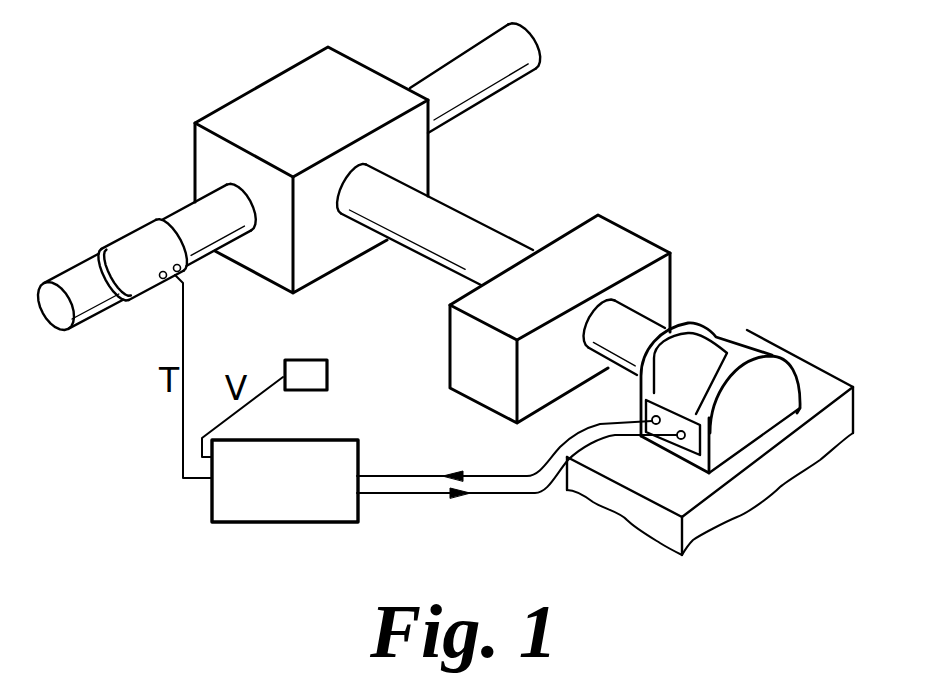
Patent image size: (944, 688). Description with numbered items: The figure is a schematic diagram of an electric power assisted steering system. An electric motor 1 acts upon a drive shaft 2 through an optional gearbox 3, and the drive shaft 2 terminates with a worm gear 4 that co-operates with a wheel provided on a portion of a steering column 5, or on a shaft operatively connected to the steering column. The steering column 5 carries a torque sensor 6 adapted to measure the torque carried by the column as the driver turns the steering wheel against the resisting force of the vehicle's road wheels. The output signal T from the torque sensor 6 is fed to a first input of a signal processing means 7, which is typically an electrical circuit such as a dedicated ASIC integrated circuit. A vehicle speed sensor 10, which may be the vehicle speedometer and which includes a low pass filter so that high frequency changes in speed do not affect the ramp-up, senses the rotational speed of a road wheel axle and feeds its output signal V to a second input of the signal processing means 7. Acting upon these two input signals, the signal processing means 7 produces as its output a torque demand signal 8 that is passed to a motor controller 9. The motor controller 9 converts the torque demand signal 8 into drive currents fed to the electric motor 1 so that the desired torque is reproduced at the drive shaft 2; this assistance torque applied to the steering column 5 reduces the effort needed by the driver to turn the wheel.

The electric motor 1 is at (760, 393).
The drive shaft 2 is at (449, 231).
The gearbox 3 is at (527, 291).
The worm gear 4 is at (292, 121).
The steering column 5 is at (430, 58).
The torque sensor 6 is at (136, 231).
The signal processing means 7 is at (307, 493).
The torque demand signal 8 is at (483, 494).
The motor controller 9 is at (690, 445).
The vehicle speed sensor 10 is at (327, 378).